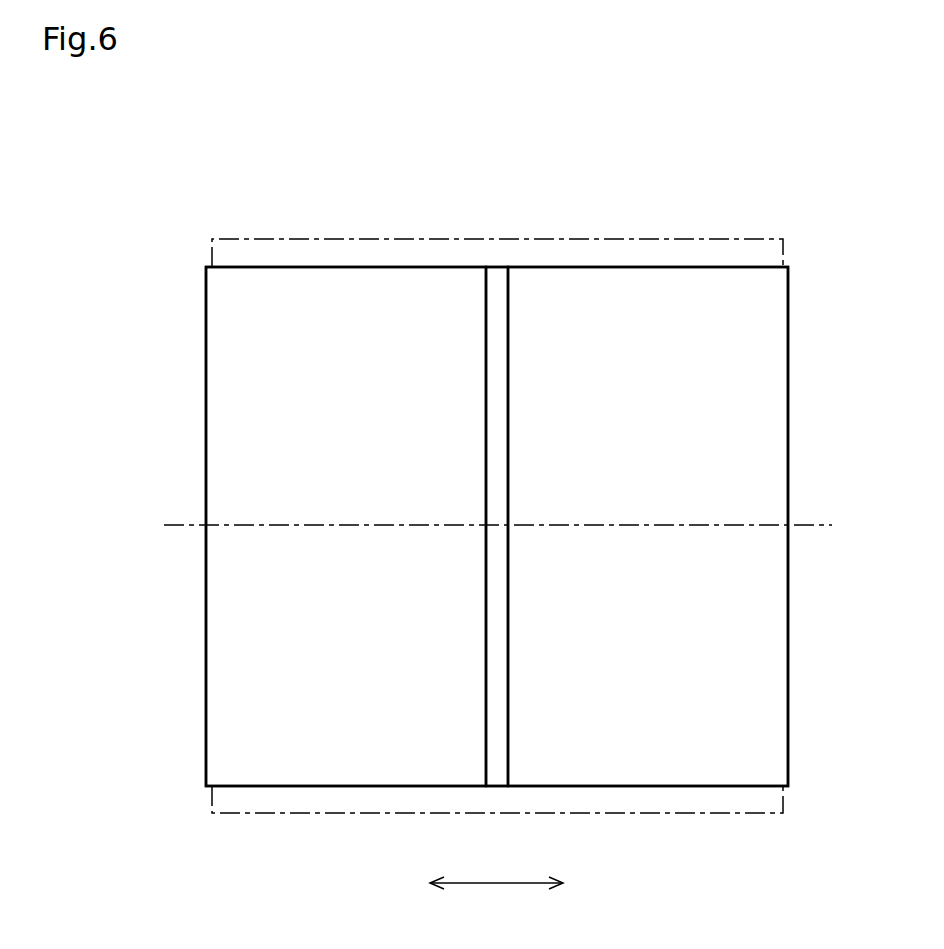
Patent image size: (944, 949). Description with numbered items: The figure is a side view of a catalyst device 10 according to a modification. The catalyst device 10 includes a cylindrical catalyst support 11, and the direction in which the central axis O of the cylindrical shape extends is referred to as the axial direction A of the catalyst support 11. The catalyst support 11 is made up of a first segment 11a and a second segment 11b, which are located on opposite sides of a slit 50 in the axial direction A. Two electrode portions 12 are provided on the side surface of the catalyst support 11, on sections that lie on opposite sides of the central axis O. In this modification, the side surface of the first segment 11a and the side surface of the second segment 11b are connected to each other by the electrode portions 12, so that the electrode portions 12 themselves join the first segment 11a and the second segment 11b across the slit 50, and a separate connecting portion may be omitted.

The catalyst device 10 is at (147, 275).
The catalyst support 11 is at (775, 302).
The first segment 11a is at (228, 407).
The second segment 11b is at (772, 431).
The electrode portion 12 is at (623, 238).
The slit 50 is at (487, 432).
The central axis O is at (183, 525).
The axial direction A is at (496, 871).